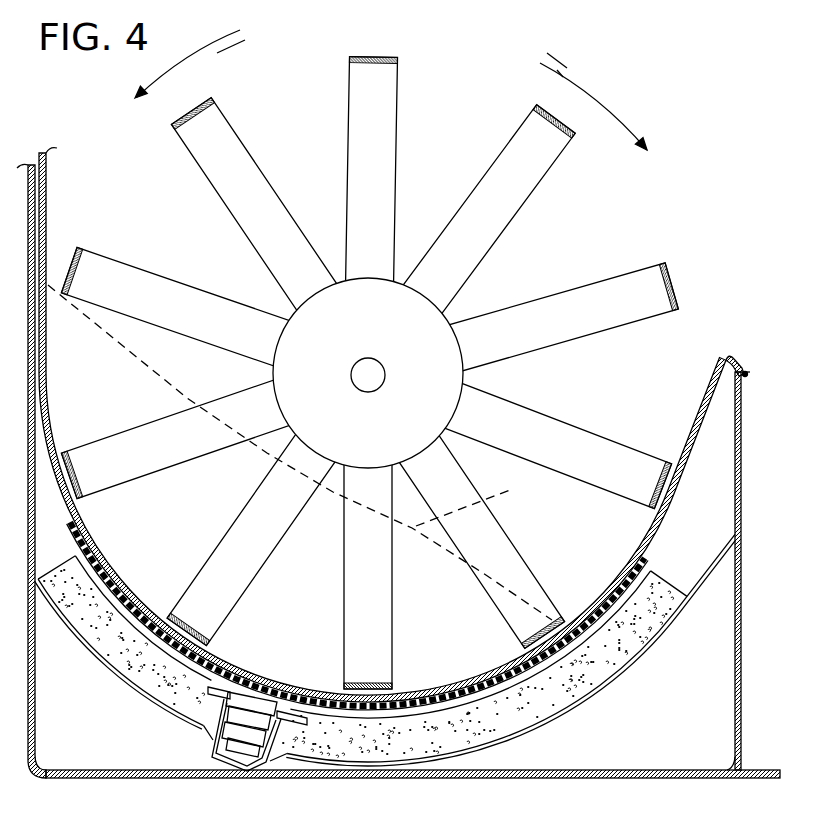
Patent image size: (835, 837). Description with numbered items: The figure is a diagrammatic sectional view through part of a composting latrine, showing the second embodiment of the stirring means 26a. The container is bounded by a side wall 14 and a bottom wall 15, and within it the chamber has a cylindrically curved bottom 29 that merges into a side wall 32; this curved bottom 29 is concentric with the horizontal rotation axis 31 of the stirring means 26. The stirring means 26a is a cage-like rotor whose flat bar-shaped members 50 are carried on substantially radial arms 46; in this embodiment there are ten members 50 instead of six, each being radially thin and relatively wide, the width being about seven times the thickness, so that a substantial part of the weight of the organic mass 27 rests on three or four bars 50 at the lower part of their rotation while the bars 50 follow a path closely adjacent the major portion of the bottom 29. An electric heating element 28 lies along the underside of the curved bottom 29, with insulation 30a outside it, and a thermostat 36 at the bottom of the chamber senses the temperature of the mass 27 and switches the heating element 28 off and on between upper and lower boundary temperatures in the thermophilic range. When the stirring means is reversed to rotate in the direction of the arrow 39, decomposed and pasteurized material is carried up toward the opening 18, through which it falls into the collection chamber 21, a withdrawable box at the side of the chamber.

The side wall 14 is at (32, 732).
The bottom wall 15 is at (547, 778).
The opening 18 is at (733, 343).
The collection chamber 21 is at (725, 658).
The stirring means 26 is at (392, 344).
The stirring means 26a is at (401, 187).
The organic mass 27 is at (300, 452).
The electric heating element 28 is at (110, 623).
The curved bottom 29 is at (252, 681).
The insulation 30a is at (563, 692).
The horizontal rotation axis 31 is at (371, 368).
The side wall 32 is at (47, 192).
The thermostat 36 is at (230, 707).
The arrow 39 is at (193, 63).
The radial arm 46 is at (253, 171).
The flat bar-shaped member 50 is at (380, 54).